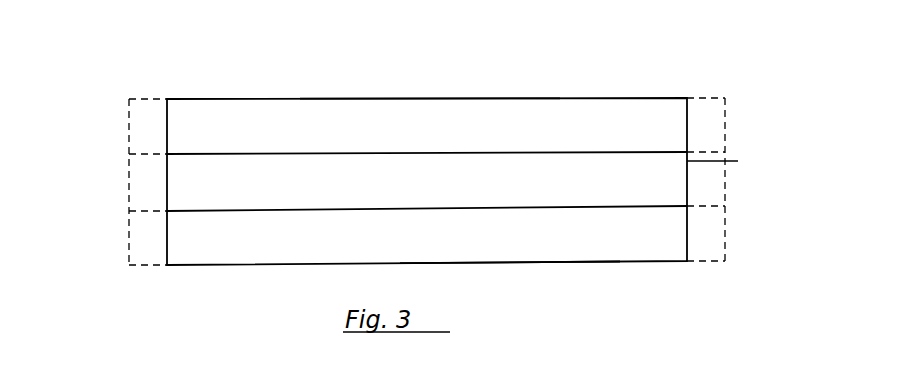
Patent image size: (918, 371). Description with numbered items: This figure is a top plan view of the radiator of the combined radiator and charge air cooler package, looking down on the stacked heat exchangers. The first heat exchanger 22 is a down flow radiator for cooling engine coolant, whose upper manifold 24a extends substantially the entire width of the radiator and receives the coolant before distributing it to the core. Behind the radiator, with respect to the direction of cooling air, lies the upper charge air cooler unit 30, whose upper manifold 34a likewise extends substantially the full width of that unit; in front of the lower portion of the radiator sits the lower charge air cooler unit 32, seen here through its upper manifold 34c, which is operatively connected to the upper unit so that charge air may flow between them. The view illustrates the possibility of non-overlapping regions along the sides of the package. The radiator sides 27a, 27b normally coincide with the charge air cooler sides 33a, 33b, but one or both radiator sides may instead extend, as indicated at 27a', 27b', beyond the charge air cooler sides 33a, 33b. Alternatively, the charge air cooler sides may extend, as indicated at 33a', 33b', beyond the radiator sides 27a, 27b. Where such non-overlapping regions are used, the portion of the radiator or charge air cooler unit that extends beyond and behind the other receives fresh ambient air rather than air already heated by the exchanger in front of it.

The first heat exchanger 22 is at (755, 195).
The upper manifold 24a is at (449, 193).
The radiator side 27a is at (479, 143).
The radiator side 27a' is at (771, 168).
The radiator side 27b is at (370, 181).
The radiator side 27b' is at (81, 203).
The upper charge air cooler unit 30 is at (760, 106).
The lower charge air cooler unit 32 is at (752, 270).
The charge air cooler side 33a is at (687, 178).
The charge air cooler side 33a' is at (755, 145).
The charge air cooler side 33b is at (119, 190).
The charge air cooler side 33b' is at (79, 185).
The upper manifold 34a is at (413, 103).
The upper manifold 34c is at (509, 253).